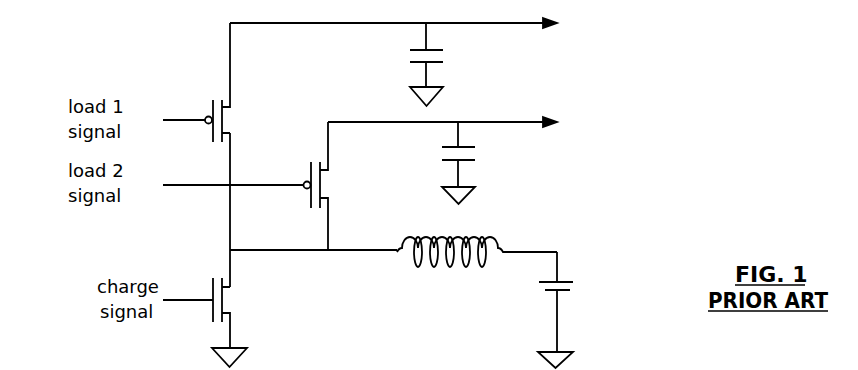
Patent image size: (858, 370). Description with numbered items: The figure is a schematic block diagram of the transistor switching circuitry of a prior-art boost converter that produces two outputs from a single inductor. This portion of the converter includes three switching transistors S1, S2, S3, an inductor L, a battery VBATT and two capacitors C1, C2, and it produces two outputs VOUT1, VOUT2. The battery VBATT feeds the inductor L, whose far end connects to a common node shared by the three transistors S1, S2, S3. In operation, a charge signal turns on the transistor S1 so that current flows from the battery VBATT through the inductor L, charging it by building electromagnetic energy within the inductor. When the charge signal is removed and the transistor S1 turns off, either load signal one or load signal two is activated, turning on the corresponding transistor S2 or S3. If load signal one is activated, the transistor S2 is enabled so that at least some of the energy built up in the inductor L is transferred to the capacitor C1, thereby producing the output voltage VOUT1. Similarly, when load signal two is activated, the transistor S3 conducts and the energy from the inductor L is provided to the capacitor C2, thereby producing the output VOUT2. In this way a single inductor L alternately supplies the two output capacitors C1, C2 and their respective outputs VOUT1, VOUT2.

The switching transistor S1 is at (218, 322).
The switching transistor S2 is at (215, 82).
The switching transistor S3 is at (264, 186).
The capacitor C1 is at (445, 64).
The capacitor C2 is at (477, 163).
The inductor L is at (477, 267).
The output voltage VOUT1 is at (425, 27).
The output voltage VOUT2 is at (478, 126).
The battery VBATT is at (585, 310).